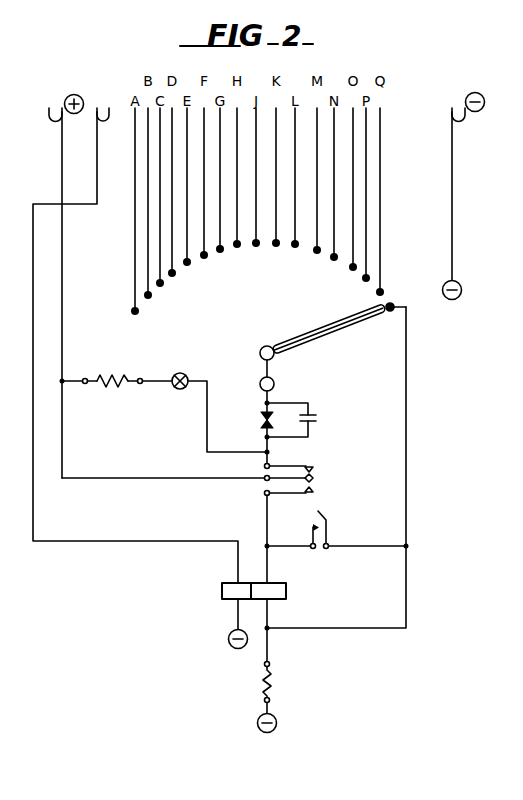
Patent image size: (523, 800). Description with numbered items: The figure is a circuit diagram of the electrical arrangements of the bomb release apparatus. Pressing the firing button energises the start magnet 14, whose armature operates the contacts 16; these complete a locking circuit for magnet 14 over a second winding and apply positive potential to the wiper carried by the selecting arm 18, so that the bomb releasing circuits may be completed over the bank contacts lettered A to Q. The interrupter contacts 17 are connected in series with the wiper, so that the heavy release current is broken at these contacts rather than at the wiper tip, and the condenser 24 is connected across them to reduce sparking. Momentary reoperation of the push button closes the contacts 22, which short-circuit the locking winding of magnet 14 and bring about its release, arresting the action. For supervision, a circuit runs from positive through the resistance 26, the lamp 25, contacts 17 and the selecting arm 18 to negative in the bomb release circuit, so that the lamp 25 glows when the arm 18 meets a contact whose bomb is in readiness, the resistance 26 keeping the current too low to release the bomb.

The start magnet 14 is at (266, 593).
The contacts 16 is at (301, 480).
The interrupter contacts 17 is at (258, 421).
The selecting arm 18 is at (323, 336).
The contacts 22 is at (338, 528).
The condenser 24 is at (303, 420).
The lamp 25 is at (182, 372).
The resistance 26 is at (128, 371).